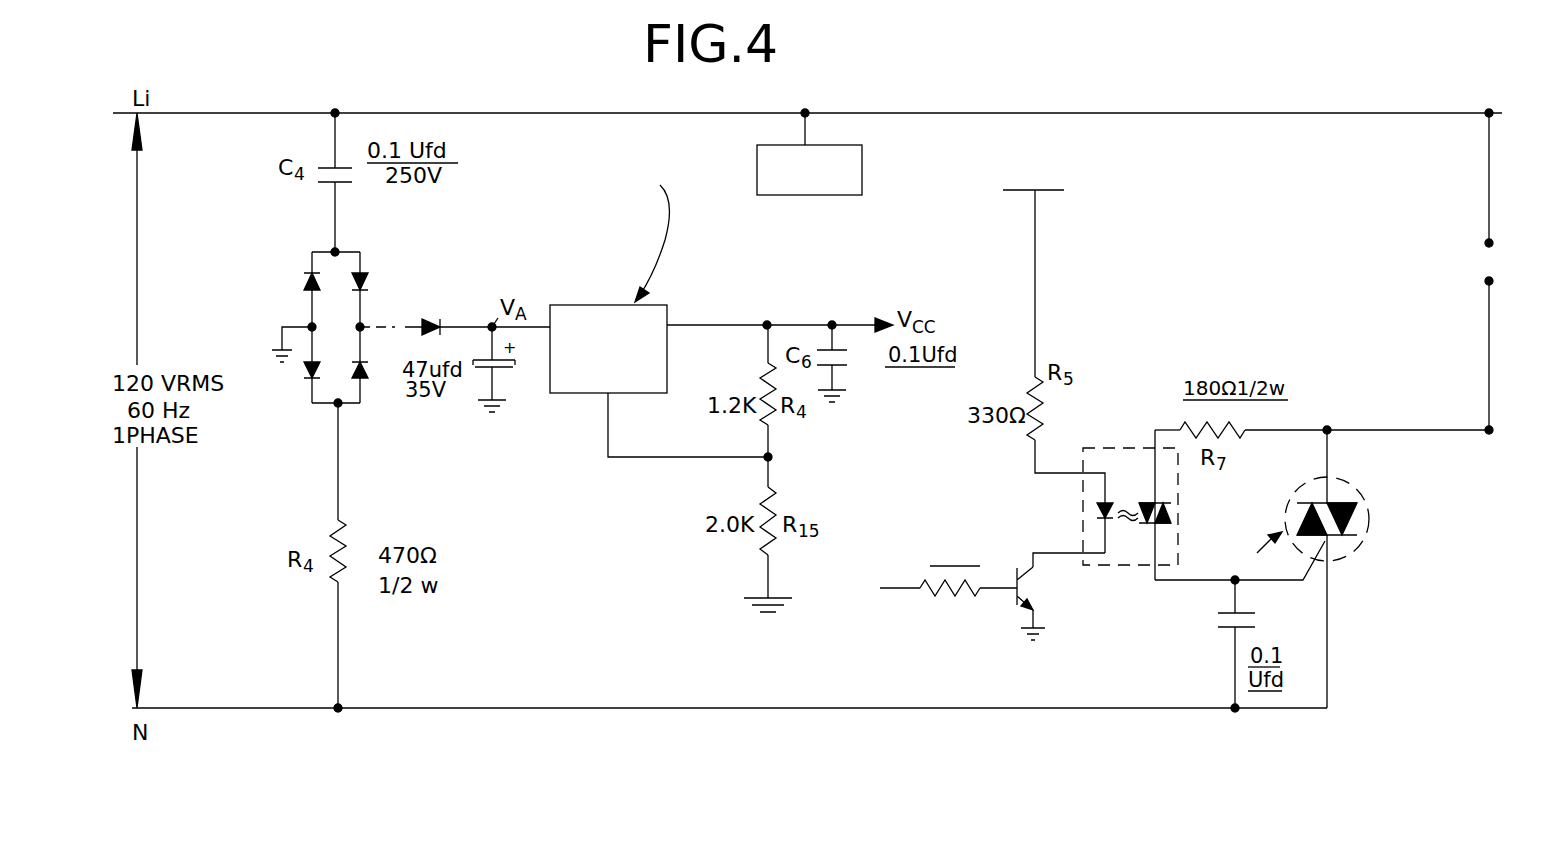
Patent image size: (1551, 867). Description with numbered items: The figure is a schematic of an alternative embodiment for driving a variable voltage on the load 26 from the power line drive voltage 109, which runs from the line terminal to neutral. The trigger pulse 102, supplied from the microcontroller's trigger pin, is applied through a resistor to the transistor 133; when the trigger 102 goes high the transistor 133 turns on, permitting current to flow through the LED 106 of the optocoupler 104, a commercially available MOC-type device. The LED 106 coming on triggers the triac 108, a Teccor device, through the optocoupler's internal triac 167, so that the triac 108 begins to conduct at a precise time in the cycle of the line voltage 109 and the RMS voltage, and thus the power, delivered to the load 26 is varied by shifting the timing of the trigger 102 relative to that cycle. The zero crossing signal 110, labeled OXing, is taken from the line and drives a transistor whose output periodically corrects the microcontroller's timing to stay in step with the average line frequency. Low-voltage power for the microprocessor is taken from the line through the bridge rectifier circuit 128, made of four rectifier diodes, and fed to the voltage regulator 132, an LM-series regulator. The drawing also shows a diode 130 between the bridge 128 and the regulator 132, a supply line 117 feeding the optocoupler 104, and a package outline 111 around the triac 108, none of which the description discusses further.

The power line drive voltage 109 is at (232, 113).
The zero crossing signal 110 is at (862, 195).
The supply voltage line VA 117 is at (1035, 263).
The optocoupler 104 is at (1150, 364).
The diode 130 is at (430, 315).
The voltage regulator 132 is at (600, 313).
The bridge rectifier circuit 128 is at (306, 418).
The trigger pulse 102 is at (853, 570).
The LED 106 is at (1095, 512).
The triac 167 is at (1173, 517).
The triac 108 is at (1334, 506).
The triac package outline 111 is at (1372, 504).
The transistor 133 is at (1022, 597).
The load 26 is at (1428, 256).